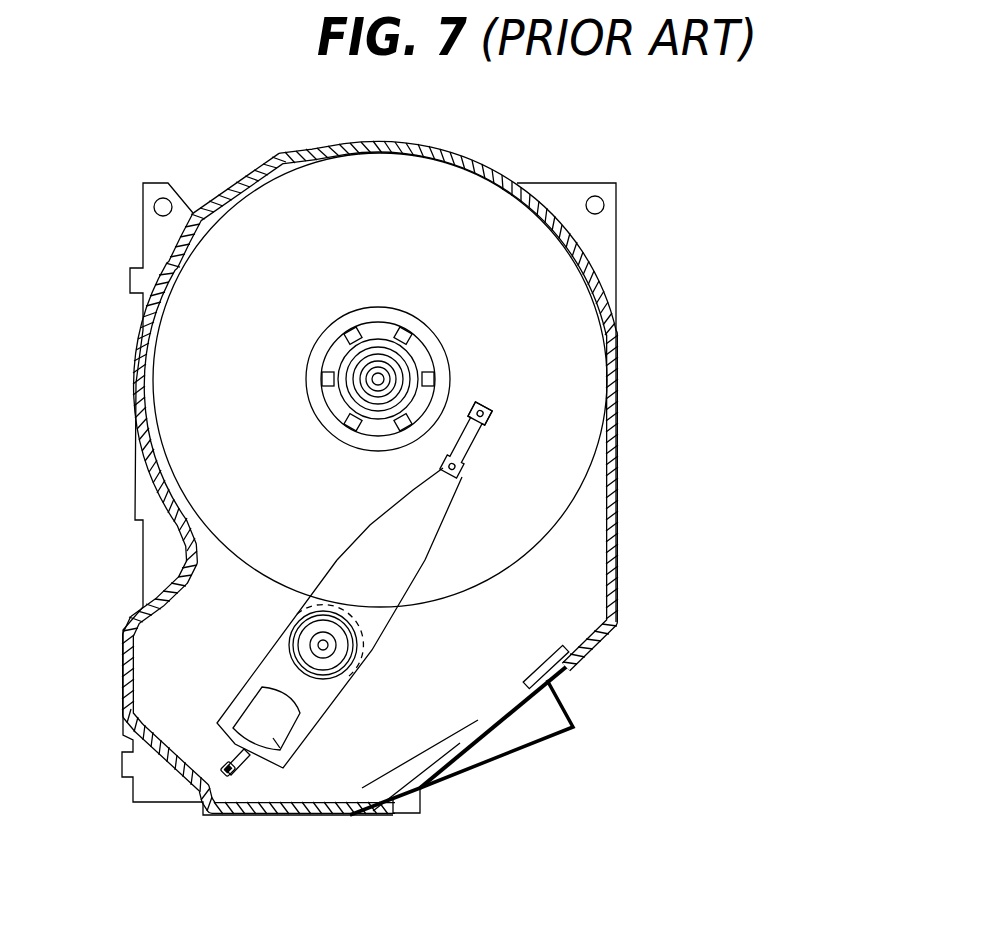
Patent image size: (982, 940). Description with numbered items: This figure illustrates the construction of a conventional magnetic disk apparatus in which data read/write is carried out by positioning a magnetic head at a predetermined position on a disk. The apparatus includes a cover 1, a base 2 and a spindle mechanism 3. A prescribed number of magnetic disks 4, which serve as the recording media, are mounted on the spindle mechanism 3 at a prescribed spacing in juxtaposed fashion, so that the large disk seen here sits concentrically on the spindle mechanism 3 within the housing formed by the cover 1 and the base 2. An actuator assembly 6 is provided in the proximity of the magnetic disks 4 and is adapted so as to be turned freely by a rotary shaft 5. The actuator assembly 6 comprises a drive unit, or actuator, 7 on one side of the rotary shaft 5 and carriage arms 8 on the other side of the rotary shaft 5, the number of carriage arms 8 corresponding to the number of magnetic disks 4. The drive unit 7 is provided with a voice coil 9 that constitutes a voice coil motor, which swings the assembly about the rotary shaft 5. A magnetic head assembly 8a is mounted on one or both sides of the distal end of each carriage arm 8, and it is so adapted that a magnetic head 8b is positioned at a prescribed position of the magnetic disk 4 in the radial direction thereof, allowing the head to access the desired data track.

The cover 1 is at (597, 226).
The base 2 is at (153, 483).
The spindle mechanism 3 is at (352, 368).
The magnetic disk 4 is at (572, 302).
The rotary shaft 5 is at (292, 632).
The actuator assembly 6 is at (368, 676).
The drive unit 7 is at (238, 694).
The carriage arm 8 is at (403, 563).
The magnetic head assembly 8a is at (486, 461).
The magnetic head 8b is at (490, 411).
The voice coil 9 is at (285, 755).